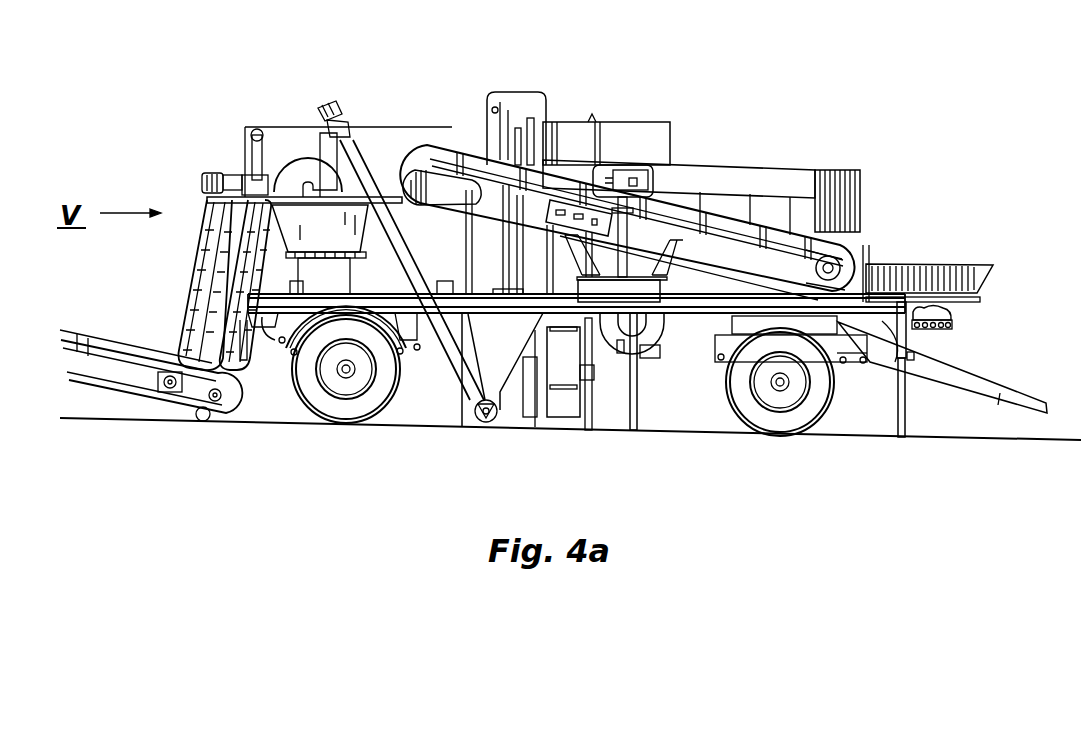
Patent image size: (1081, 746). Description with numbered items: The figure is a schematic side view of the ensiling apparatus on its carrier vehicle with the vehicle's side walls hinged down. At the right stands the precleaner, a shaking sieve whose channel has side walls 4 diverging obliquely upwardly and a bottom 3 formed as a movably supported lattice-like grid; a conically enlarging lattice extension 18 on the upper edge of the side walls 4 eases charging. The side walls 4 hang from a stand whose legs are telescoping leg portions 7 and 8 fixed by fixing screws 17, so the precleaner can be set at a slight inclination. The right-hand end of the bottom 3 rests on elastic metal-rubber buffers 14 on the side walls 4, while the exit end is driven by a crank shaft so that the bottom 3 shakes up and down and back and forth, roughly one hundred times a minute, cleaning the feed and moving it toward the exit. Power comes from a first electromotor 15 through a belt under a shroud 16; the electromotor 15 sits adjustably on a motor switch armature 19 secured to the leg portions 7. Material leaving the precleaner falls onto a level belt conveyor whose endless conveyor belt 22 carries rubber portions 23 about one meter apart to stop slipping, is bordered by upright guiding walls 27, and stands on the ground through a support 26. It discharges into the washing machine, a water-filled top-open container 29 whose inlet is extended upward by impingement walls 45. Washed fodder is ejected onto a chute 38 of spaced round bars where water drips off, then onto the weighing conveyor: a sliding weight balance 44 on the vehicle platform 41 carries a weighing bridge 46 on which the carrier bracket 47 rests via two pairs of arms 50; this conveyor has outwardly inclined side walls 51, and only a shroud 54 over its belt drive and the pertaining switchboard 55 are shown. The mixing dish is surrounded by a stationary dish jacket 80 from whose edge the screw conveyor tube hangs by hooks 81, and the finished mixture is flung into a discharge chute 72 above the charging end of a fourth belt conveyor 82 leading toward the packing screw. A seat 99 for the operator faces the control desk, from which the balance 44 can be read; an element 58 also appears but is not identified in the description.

The bottom 3 is at (887, 327).
The side walls 4 is at (958, 311).
The leg portion 7 is at (907, 343).
The leg portion 8 is at (637, 413).
The metal-rubber buffers 14 is at (940, 326).
The first electromotor 15 is at (663, 345).
The shroud 16 is at (620, 353).
The fixing screws 17 is at (914, 357).
The conically enlarging extension 18 is at (940, 277).
The motor switch armature 19 is at (648, 358).
The conveyor belt 22 is at (555, 343).
The rubber portions 23 is at (567, 390).
The support 26 is at (588, 425).
The upright guiding walls 27 is at (594, 380).
The container 29 is at (712, 173).
The chute 38 is at (835, 173).
The platform 41 is at (287, 318).
The sliding weight balance 44 is at (633, 178).
The impingement walls 45 is at (610, 138).
The weighing bridge 46 is at (645, 277).
The carrier bracket 47 is at (737, 243).
The pairs of arms 50 is at (575, 240).
The side walls 51 is at (860, 233).
The shroud 54 is at (452, 195).
The switchboard 55 is at (560, 220).
The support block 58 is at (308, 272).
The discharge chute 72 is at (198, 273).
The dish jacket 80 is at (337, 218).
The hooks 81 is at (367, 247).
The belt conveyor 82 is at (128, 348).
The seat 99 is at (493, 93).